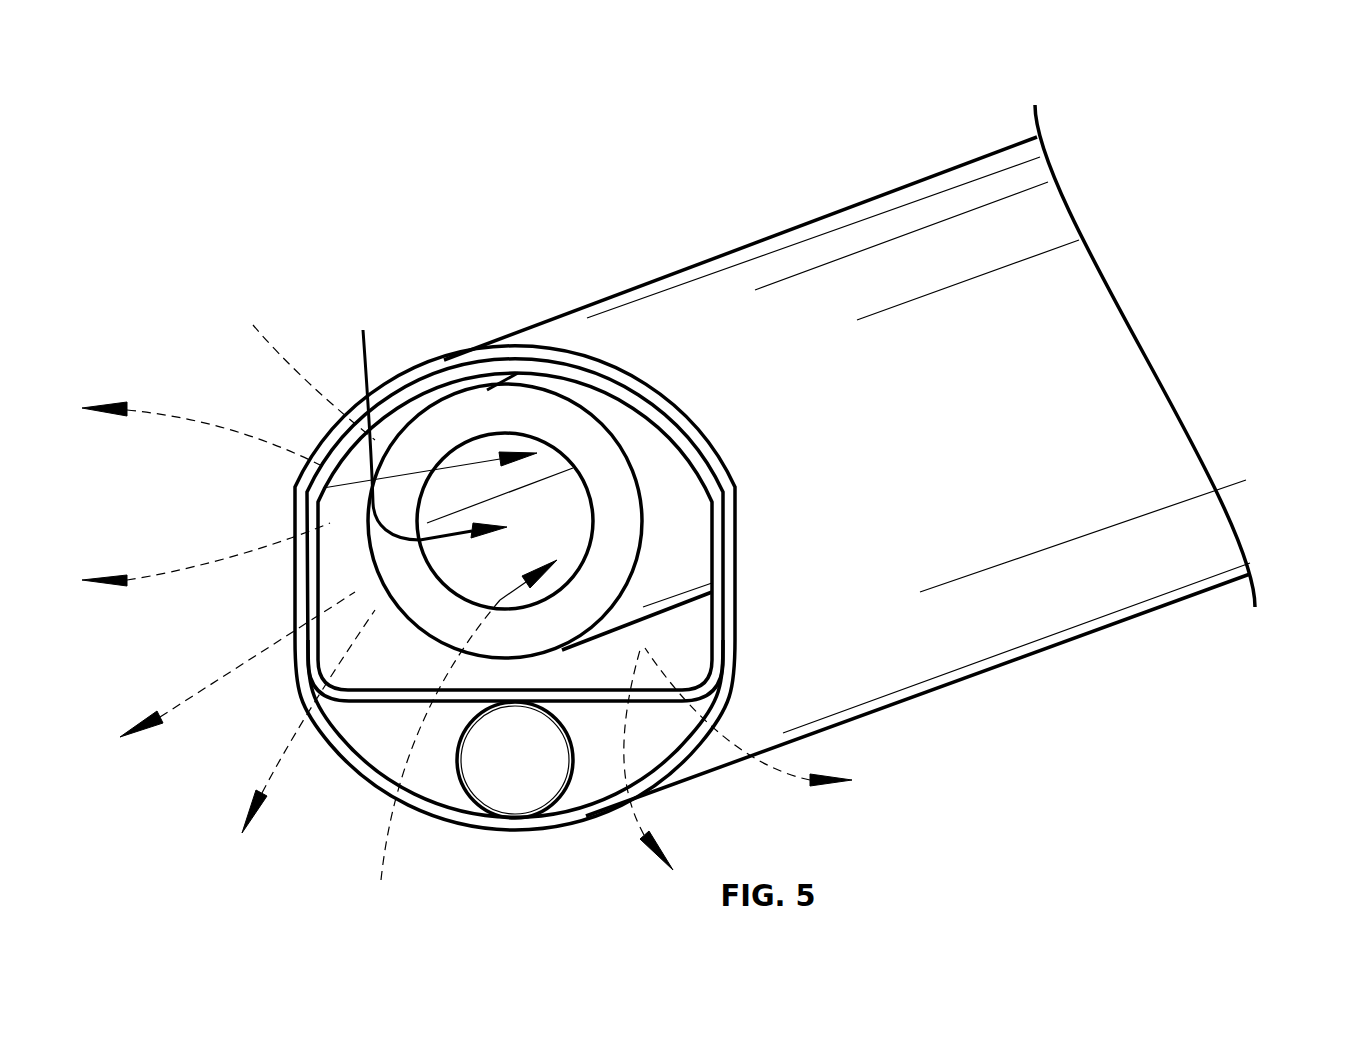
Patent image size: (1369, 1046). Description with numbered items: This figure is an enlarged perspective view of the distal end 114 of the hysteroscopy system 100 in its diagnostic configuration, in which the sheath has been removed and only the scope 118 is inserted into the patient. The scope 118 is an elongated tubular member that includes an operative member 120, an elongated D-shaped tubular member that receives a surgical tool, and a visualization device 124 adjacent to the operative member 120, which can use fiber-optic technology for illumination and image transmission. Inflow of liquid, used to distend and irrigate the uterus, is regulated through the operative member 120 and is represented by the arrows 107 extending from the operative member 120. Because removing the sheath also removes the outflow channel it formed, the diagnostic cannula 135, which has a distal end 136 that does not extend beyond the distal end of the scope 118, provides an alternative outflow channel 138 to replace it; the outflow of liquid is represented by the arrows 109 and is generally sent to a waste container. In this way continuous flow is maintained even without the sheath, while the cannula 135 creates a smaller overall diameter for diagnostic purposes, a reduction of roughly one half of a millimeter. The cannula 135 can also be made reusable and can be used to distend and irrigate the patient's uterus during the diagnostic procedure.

The hysteroscopy system 100 is at (1240, 130).
The arrows representing inflow of liquid 107 is at (176, 413).
The arrows representing outflow of liquid 109 is at (272, 358).
The distal end 114 is at (285, 240).
The scope 118 is at (712, 325).
The operative member 120 is at (407, 682).
The visualization device 124 is at (505, 780).
The diagnostic cannula 135 is at (365, 505).
The distal end of diagnostic cannula 136 is at (525, 408).
The alternative outflow channel 138 is at (424, 411).